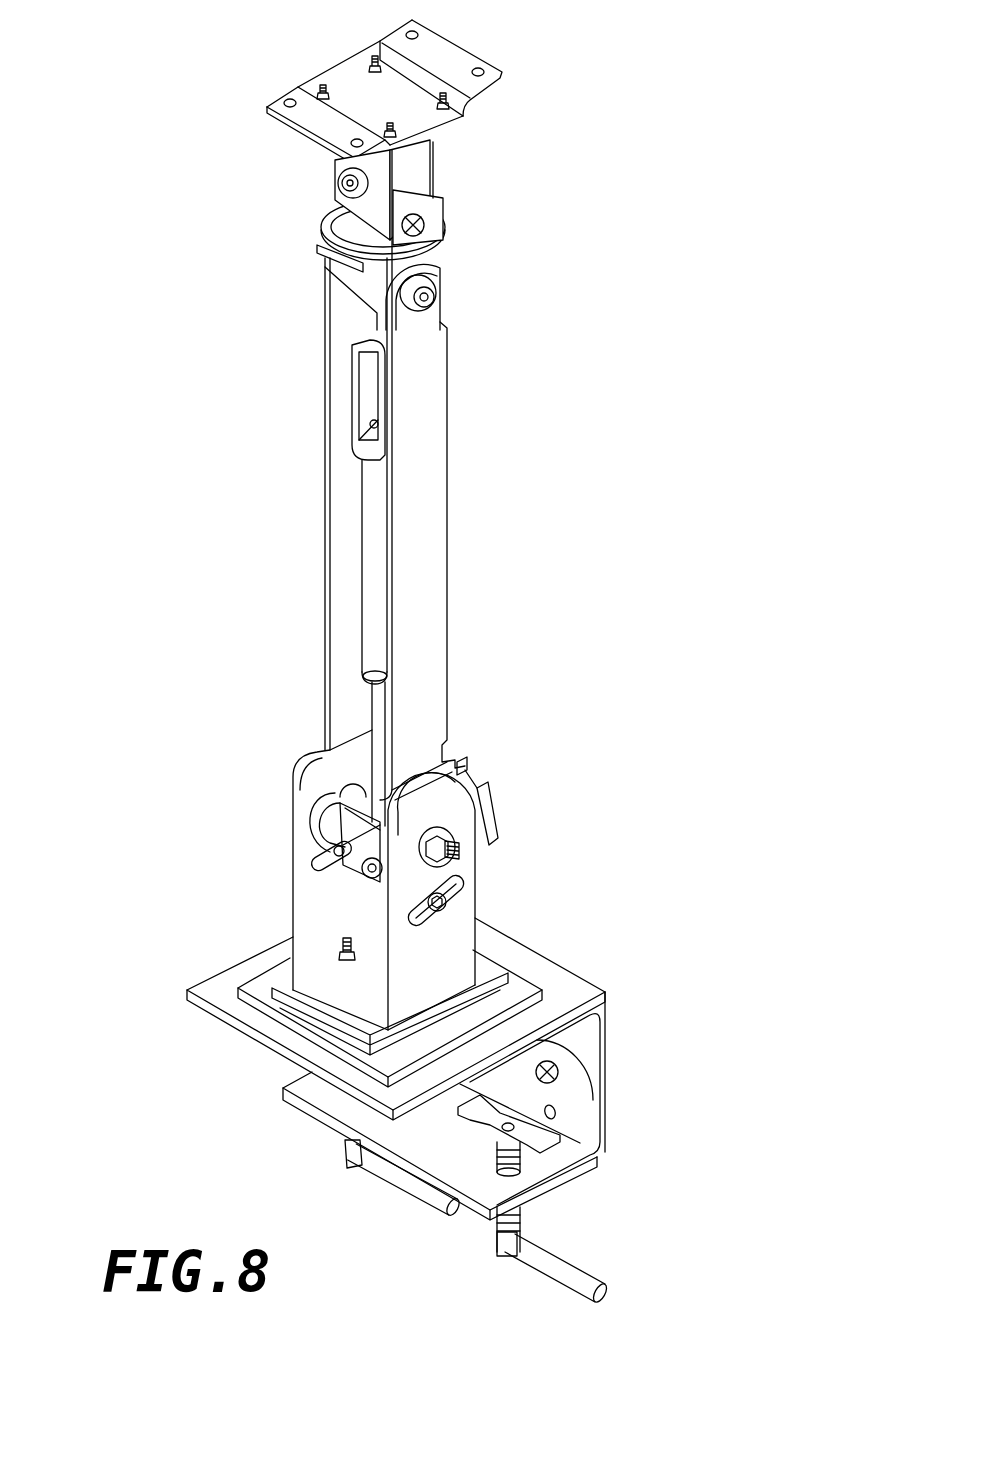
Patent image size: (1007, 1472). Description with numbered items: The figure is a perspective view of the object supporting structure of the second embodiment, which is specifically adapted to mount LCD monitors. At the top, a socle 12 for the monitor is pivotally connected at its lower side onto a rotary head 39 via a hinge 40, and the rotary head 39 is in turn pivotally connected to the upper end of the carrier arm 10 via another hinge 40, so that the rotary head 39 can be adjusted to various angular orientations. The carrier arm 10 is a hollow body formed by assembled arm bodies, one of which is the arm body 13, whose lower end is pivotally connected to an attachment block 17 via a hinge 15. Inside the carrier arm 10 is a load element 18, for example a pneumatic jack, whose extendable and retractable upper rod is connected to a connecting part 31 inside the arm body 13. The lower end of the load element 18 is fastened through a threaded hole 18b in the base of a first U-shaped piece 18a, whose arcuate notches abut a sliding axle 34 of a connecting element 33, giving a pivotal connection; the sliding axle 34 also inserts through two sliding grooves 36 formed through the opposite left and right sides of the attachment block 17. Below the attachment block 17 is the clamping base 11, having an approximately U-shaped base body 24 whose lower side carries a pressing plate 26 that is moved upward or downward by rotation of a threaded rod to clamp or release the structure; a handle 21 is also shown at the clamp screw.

The carrier arm 10 is at (520, 516).
The clamping base 11 is at (694, 1018).
The socle 12 is at (287, 40).
The arm body 13 is at (435, 560).
The hinge 15 is at (458, 860).
The attachment block 17 is at (460, 960).
The load element 18 is at (373, 545).
The first U-shaped piece 18a is at (343, 817).
The threaded hole 18b is at (338, 805).
The clamp screw handle 21 is at (555, 1265).
The base body 24 is at (604, 1072).
The pressing plate 26 is at (556, 1140).
The connecting part 31 is at (370, 347).
The connecting element 33 is at (373, 868).
The sliding axle 34 is at (333, 852).
The sliding groove 36 is at (313, 868).
The rotary head 39 is at (444, 237).
The hinge 40 is at (346, 183).